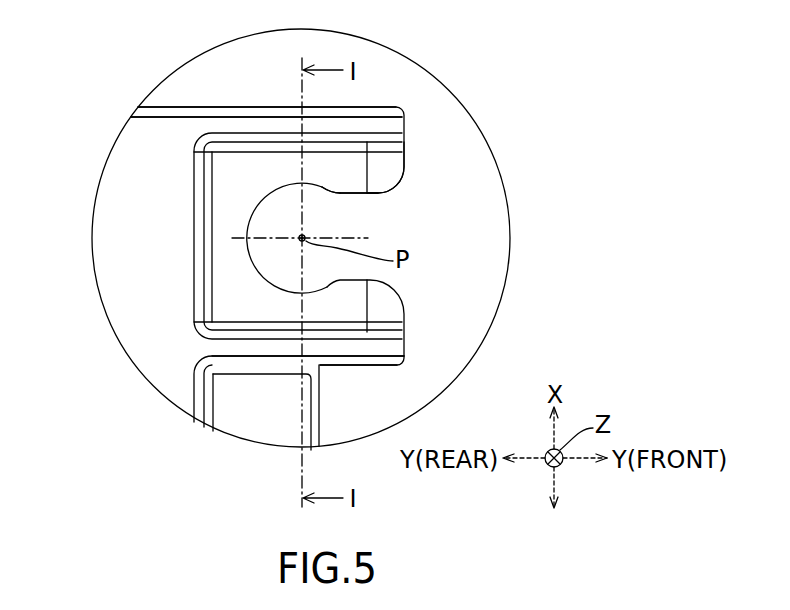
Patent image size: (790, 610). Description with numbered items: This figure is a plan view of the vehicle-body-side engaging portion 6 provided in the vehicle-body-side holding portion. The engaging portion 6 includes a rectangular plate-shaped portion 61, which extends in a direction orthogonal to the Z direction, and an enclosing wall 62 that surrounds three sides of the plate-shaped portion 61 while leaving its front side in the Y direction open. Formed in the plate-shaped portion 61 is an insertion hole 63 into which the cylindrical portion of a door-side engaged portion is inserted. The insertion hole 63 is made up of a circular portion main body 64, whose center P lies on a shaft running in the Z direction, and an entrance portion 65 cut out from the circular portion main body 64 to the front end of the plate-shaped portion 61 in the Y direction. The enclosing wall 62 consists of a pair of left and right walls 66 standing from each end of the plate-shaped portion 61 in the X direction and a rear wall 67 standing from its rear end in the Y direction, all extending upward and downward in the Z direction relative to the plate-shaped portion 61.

The vehicle-body-side engaging portion 6 is at (422, 98).
The enclosing wall 62 is at (406, 117).
The left and right walls 66 is at (393, 125).
The plate-shaped portion 61 is at (383, 166).
The insertion hole 63 is at (462, 182).
The entrance portion 65 is at (368, 194).
The circular portion main body 64 is at (322, 190).
The rear wall 67 is at (212, 260).